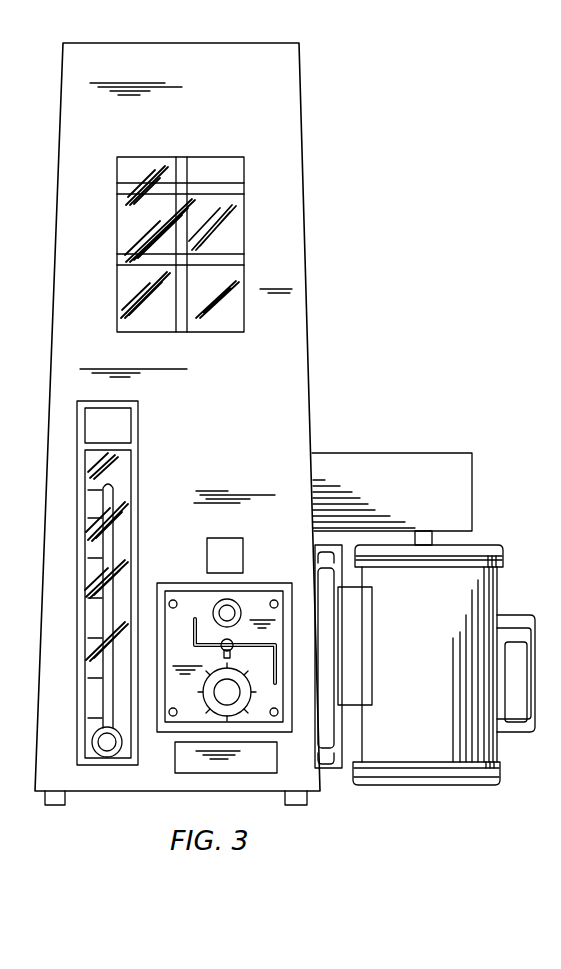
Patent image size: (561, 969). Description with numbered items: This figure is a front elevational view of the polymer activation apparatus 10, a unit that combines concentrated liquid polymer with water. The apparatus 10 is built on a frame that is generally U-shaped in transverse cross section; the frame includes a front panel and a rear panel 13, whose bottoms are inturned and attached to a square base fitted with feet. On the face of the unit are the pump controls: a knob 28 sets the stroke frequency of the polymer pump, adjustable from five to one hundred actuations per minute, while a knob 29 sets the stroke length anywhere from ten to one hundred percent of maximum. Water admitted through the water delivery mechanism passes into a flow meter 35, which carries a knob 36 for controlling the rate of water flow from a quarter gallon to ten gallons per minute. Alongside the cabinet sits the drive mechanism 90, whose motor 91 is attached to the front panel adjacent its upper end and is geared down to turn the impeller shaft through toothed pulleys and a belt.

The polymer activation apparatus 10 is at (354, 229).
The rear panel 13 is at (298, 331).
The knob 28 is at (232, 606).
The knob 29 is at (222, 698).
The flow meter 35 is at (140, 473).
The knob 36 is at (105, 753).
The drive mechanism 90 is at (487, 538).
The motor 91 is at (488, 610).